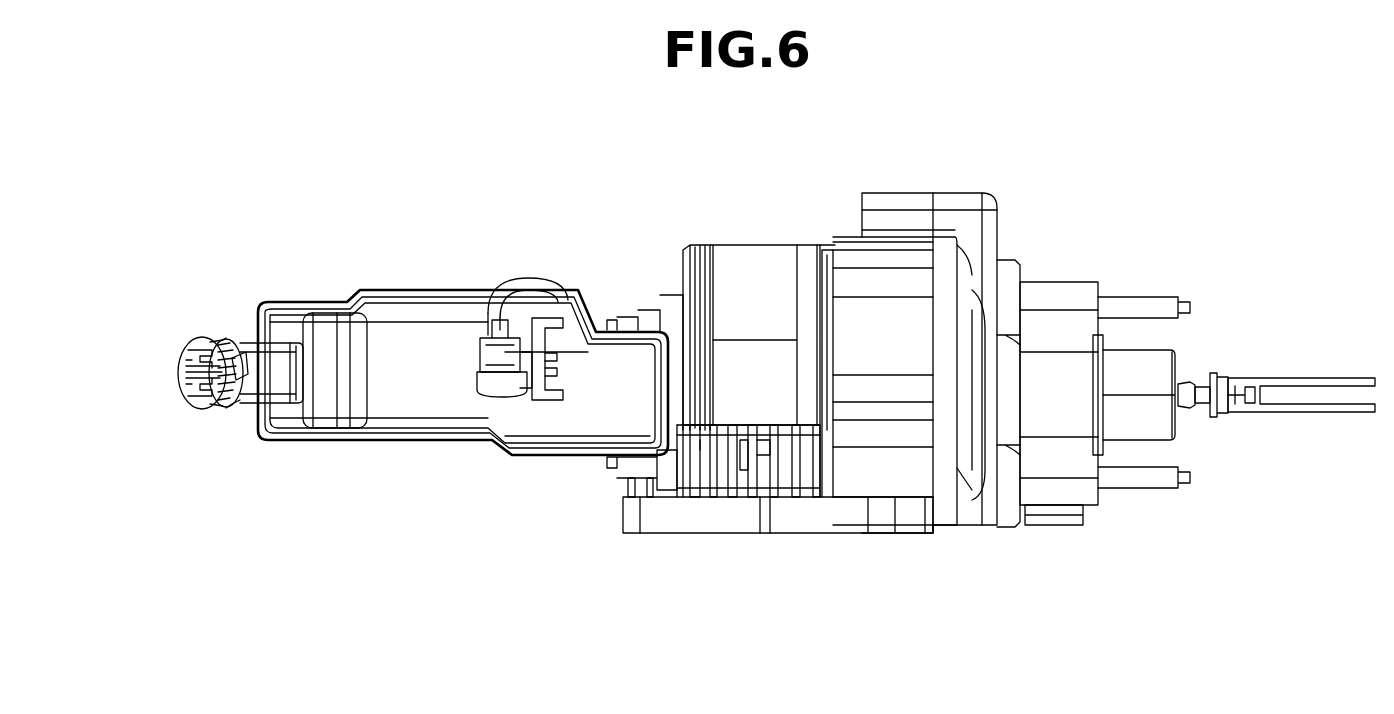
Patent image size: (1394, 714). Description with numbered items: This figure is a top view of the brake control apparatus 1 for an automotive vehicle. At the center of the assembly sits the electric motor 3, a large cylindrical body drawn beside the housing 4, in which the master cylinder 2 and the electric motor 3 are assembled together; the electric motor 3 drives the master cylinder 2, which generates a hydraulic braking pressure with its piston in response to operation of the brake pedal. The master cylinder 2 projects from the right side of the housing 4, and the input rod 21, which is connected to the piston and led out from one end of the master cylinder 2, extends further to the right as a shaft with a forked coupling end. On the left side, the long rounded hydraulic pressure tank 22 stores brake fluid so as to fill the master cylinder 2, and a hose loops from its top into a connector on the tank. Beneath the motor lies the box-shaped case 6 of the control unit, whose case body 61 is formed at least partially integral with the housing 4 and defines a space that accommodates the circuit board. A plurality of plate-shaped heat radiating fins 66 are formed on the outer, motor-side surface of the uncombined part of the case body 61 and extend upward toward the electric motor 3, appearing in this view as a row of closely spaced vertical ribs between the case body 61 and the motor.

The electric brake apparatus 1 is at (517, 224).
The master cylinder 2 is at (1197, 345).
The electric motor 3 is at (751, 265).
The housing 4 is at (906, 200).
The case 6 is at (856, 550).
The input rod 21 is at (1214, 378).
The hydraulic pressure tank 22 is at (396, 290).
The case body 61 is at (630, 513).
The heat radiating fins 66 is at (648, 497).